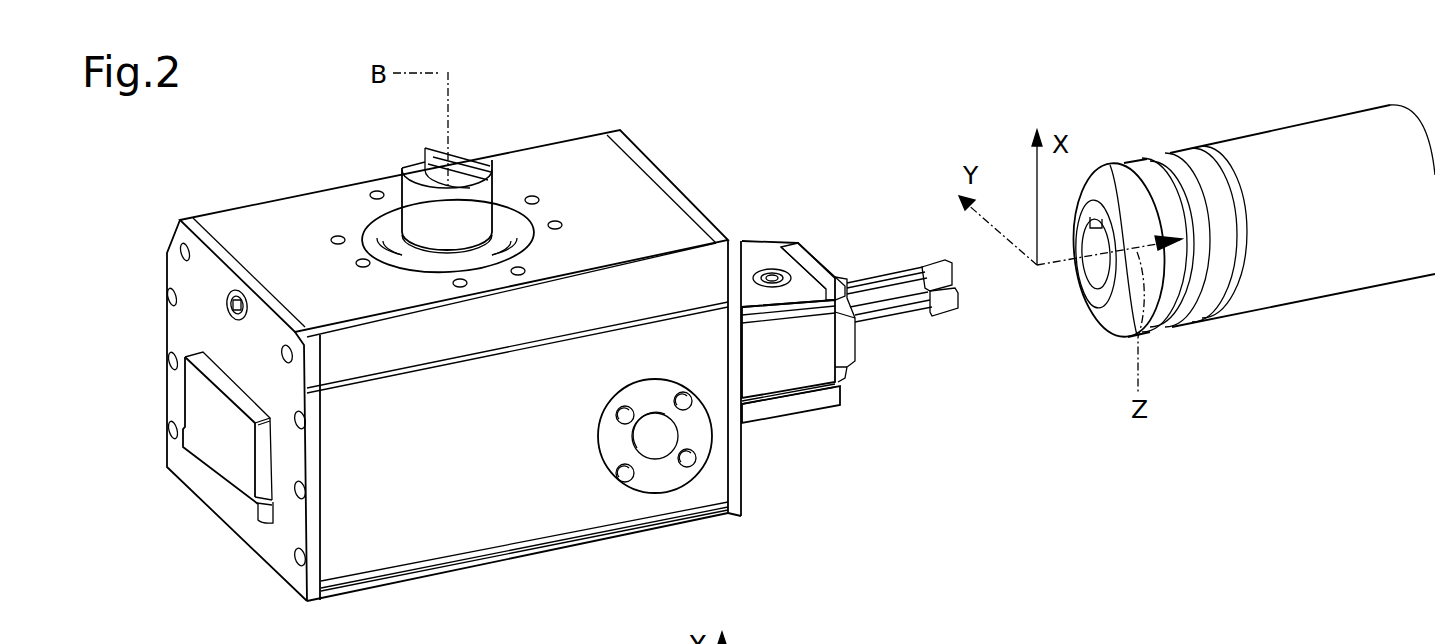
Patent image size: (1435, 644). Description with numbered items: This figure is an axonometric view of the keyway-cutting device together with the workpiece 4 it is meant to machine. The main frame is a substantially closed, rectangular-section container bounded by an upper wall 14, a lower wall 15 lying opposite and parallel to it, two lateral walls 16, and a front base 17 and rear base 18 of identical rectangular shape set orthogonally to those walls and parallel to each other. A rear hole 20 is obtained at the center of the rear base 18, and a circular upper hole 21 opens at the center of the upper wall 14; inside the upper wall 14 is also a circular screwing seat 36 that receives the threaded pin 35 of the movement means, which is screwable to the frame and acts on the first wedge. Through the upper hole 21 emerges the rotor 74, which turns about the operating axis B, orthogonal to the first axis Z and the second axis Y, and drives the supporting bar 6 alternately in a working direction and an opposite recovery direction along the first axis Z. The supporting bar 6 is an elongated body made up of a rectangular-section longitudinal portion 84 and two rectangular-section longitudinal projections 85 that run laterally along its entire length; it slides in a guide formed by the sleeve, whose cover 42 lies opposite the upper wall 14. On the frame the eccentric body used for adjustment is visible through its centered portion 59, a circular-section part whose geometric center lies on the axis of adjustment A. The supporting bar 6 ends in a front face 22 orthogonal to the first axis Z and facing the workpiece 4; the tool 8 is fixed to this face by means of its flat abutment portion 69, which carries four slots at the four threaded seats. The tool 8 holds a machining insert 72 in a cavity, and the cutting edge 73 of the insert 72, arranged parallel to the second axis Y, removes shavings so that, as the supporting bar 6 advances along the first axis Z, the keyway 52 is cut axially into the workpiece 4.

The workpiece 4 is at (1378, 252).
The supporting bar 6 is at (743, 260).
The tool 8 is at (892, 273).
The upper wall 14 is at (542, 170).
The lower wall 15 is at (335, 603).
The lateral walls 16 is at (513, 475).
The front base 17 is at (635, 157).
The rear base 18 is at (177, 268).
The rear hole 20 is at (270, 523).
The upper hole 21 is at (377, 230).
The front face 22 is at (850, 363).
The threaded pin 35 is at (233, 321).
The circular screwing seat 36 is at (223, 300).
The cover 42 is at (513, 150).
The keyway 52 is at (1080, 212).
The centered portion 59 is at (770, 270).
The flat abutment portion 69 is at (810, 260).
The machining insert 72 is at (933, 290).
The cutting edge 73 is at (947, 262).
The rotor 74 is at (457, 148).
The longitudinal portion 84 is at (760, 367).
The longitudinal projections 85 is at (805, 400).